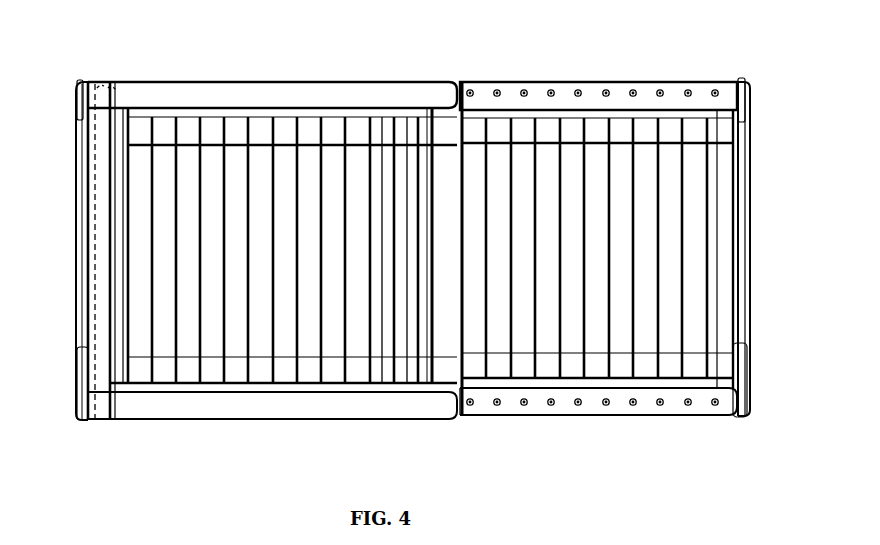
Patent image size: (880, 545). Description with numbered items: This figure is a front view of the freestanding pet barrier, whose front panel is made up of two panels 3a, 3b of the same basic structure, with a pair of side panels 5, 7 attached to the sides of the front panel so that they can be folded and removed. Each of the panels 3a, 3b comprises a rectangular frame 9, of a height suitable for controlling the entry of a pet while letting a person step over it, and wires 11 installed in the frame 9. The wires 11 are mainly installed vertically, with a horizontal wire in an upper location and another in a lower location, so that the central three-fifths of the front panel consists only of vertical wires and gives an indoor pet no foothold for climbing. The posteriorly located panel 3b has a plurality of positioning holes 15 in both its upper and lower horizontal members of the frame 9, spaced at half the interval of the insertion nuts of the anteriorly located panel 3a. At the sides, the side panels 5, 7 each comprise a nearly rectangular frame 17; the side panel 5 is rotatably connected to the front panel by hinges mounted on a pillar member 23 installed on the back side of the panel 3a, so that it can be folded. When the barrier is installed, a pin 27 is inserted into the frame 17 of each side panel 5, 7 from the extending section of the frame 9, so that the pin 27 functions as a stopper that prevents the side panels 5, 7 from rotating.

The panel 3a is at (300, 74).
The panel 3b is at (634, 74).
The side panel 5 is at (68, 187).
The side panel 7 is at (758, 180).
The rectangular frame 9 is at (237, 82).
The wires 11 is at (249, 322).
The positioning holes 15 is at (551, 90).
The frame 17 is at (75, 276).
The pillar member 23 is at (118, 86).
The pin 27 is at (79, 78).